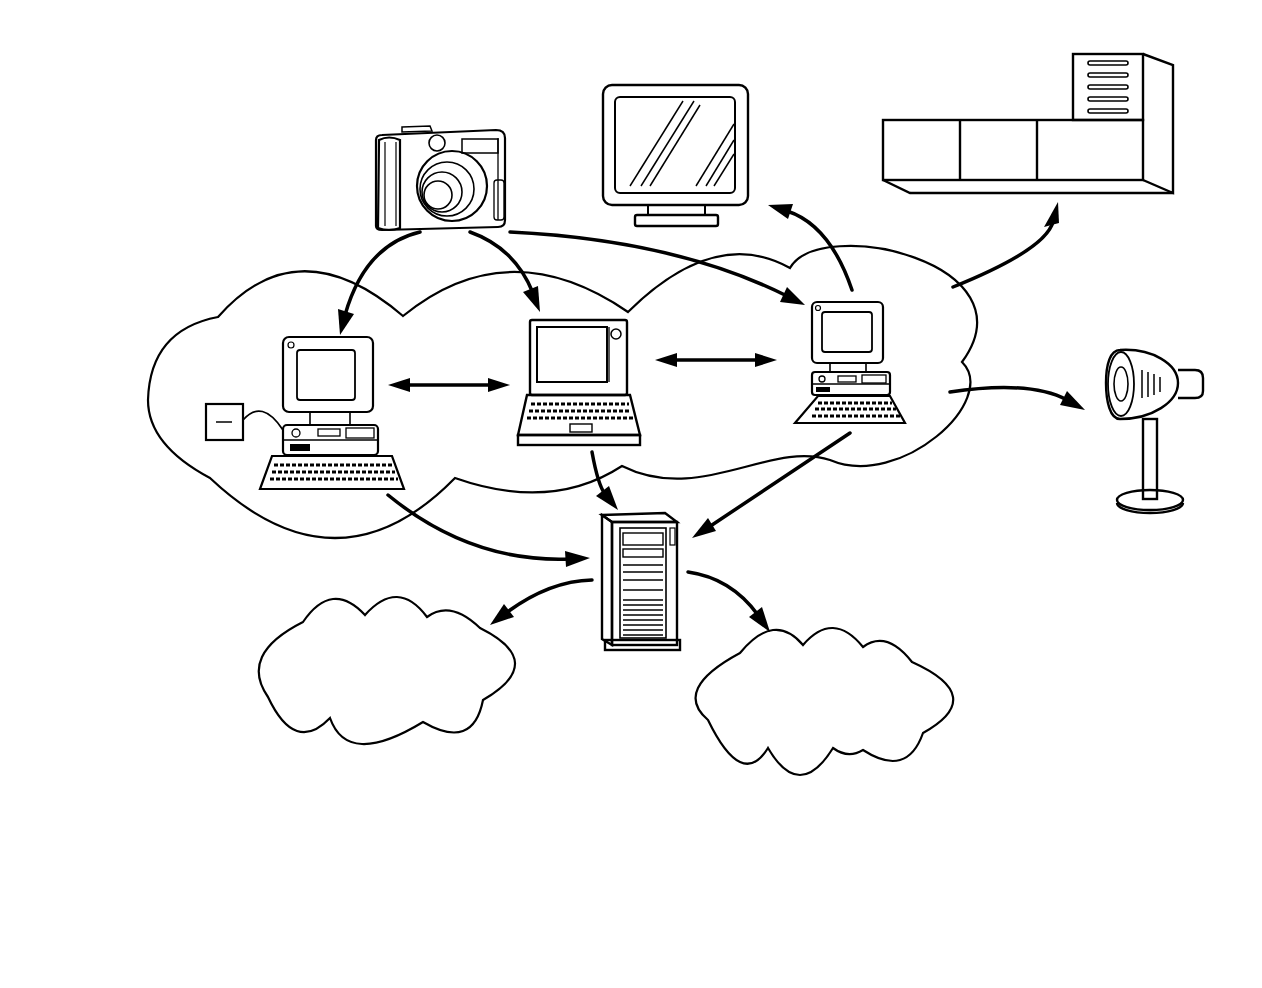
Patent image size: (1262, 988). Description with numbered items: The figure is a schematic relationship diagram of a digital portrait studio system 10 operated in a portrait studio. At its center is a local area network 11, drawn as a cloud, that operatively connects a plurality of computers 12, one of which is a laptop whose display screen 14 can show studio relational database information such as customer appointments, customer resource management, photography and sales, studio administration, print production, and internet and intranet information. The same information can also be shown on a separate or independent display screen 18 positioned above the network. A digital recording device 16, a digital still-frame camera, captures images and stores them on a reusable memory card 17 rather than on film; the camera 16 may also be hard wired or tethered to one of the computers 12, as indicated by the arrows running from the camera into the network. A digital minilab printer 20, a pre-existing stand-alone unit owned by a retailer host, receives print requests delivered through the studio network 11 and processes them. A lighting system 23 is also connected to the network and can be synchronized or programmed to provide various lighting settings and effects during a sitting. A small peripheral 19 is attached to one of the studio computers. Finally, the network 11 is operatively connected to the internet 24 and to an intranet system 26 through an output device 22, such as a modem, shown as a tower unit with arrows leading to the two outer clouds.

The digital portrait studio system 10 is at (103, 236).
The local area network 11 is at (148, 403).
The computers 12 is at (636, 331).
The display screen 14 is at (545, 358).
The digital recording device 16 is at (394, 115).
The memory card 17 is at (376, 186).
The display screen 18 is at (748, 88).
The peripheral device 19 is at (206, 406).
The digital minilab printer 20 is at (1185, 106).
The output device 22 is at (590, 610).
The lighting system 23 is at (1175, 337).
The internet 24 is at (972, 710).
The intranet system 26 is at (253, 728).